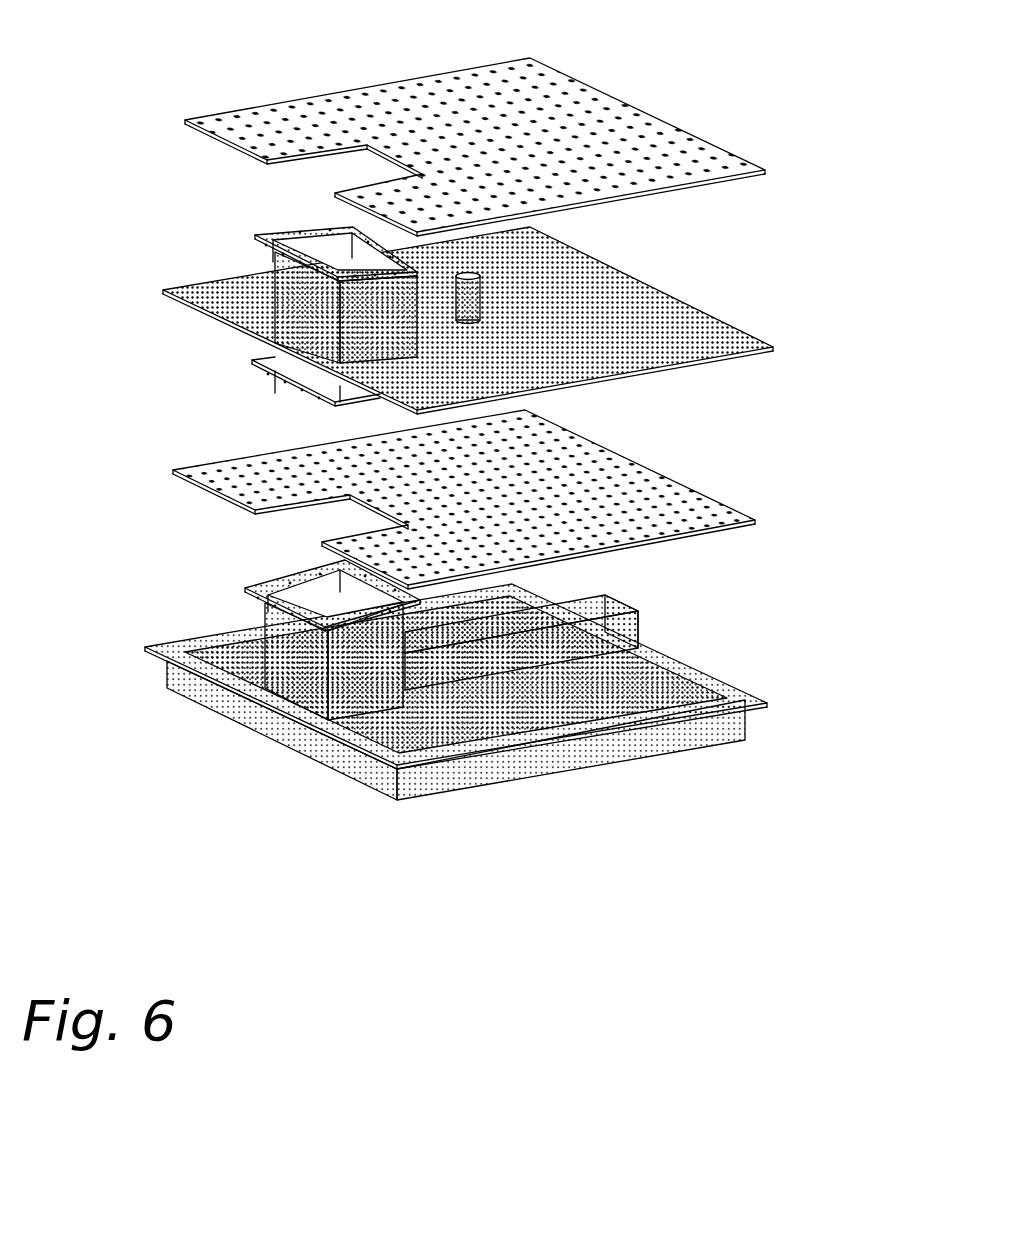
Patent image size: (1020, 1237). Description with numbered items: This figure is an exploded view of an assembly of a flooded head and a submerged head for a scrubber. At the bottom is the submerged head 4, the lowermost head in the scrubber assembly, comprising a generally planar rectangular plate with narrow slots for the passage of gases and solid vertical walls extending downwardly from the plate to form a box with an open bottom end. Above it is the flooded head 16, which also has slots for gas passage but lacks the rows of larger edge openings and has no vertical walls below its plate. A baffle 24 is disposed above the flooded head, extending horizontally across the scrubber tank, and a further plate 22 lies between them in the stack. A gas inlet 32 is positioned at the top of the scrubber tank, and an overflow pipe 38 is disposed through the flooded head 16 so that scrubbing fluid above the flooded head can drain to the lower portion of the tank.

The submerged head 4 is at (742, 667).
The flooded head 16 is at (703, 303).
The lower perforated plate 22 is at (717, 502).
The baffle 24 is at (625, 104).
The gas inlet 32 is at (347, 263).
The overflow pipe 38 is at (478, 290).